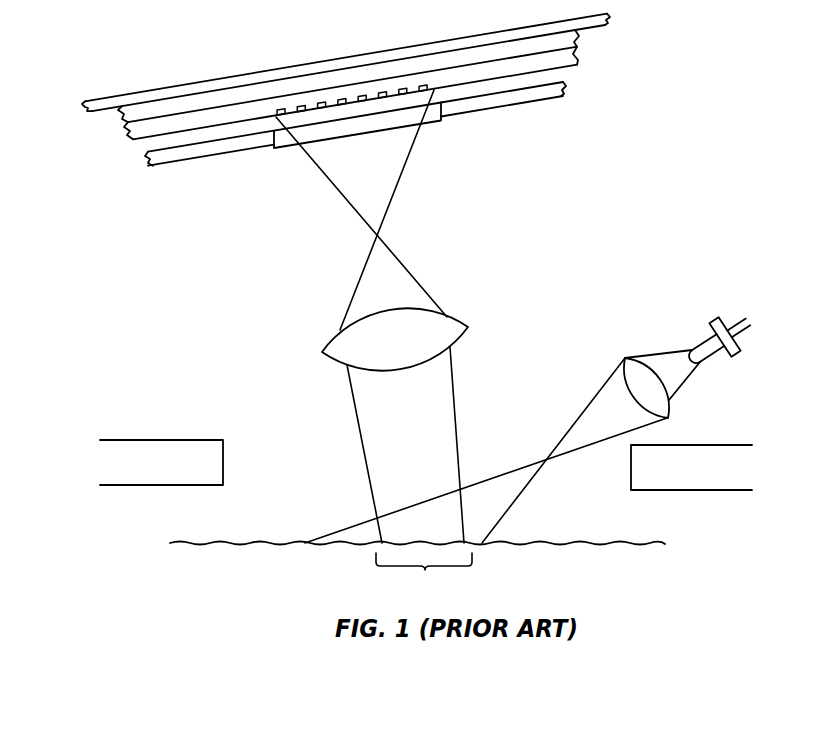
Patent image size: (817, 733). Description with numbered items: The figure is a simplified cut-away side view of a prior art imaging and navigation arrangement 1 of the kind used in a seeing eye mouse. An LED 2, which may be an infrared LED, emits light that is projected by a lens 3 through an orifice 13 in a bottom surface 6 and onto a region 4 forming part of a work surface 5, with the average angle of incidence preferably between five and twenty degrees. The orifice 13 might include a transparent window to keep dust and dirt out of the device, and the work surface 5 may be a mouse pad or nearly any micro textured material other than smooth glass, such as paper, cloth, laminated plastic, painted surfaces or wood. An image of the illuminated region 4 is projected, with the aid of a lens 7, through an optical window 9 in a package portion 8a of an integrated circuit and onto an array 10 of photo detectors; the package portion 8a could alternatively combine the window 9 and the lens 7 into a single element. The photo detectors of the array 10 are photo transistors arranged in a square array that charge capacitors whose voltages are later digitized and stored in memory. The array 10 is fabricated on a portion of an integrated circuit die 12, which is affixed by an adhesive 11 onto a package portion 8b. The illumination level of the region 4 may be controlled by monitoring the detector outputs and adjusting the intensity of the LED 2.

The imaging and navigation arrangement 1 is at (710, 85).
The LED 2 is at (697, 347).
The lens 3 is at (625, 358).
The region 4 is at (424, 575).
The work surface 5 is at (568, 543).
The bottom surface 6 is at (135, 440).
The lens 7 is at (322, 351).
The package portion 8a is at (155, 168).
The package portion 8b is at (92, 117).
The optical window 9 is at (277, 150).
The array of photo detectors 10 is at (363, 102).
The adhesive 11 is at (122, 115).
The integrated circuit die 12 is at (128, 137).
The orifice 13 is at (303, 457).